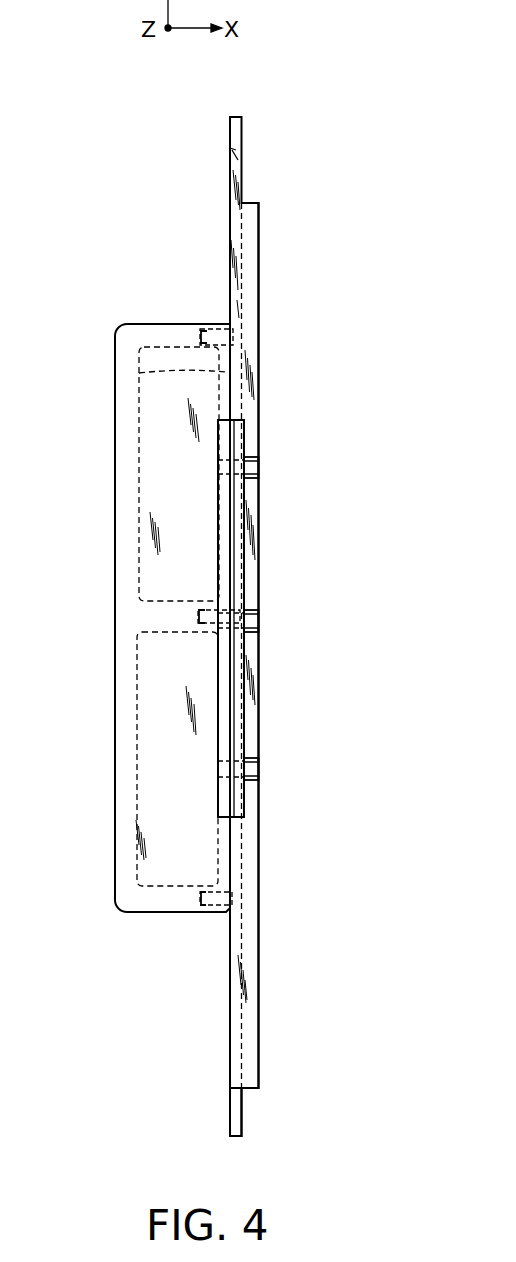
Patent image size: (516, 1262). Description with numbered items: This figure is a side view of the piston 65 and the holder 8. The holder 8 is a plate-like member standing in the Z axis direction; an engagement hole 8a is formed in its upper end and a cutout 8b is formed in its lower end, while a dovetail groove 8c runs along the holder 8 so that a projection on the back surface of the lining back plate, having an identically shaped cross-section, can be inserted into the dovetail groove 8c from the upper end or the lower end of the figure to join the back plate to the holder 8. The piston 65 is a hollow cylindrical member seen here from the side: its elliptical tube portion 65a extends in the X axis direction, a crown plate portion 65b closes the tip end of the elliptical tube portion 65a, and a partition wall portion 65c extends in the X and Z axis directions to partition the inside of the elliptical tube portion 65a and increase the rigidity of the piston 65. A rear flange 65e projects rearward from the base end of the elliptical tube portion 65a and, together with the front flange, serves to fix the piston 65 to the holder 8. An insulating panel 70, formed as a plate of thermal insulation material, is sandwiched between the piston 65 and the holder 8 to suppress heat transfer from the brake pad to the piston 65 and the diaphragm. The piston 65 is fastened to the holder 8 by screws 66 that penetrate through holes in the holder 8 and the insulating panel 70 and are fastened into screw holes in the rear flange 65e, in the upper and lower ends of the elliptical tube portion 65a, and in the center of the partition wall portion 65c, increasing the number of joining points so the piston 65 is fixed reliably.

The holder 8 is at (244, 120).
The engagement hole 8a is at (245, 163).
The cutout 8b is at (232, 1050).
The dovetail groove 8c is at (243, 282).
The piston 65 is at (117, 907).
The elliptical tube portion 65a is at (167, 898).
The crown plate portion 65b is at (125, 508).
The partition wall portion 65c is at (139, 636).
The rear flange 65e is at (218, 700).
The screws 66 is at (210, 328).
The insulating panel 70 is at (139, 373).